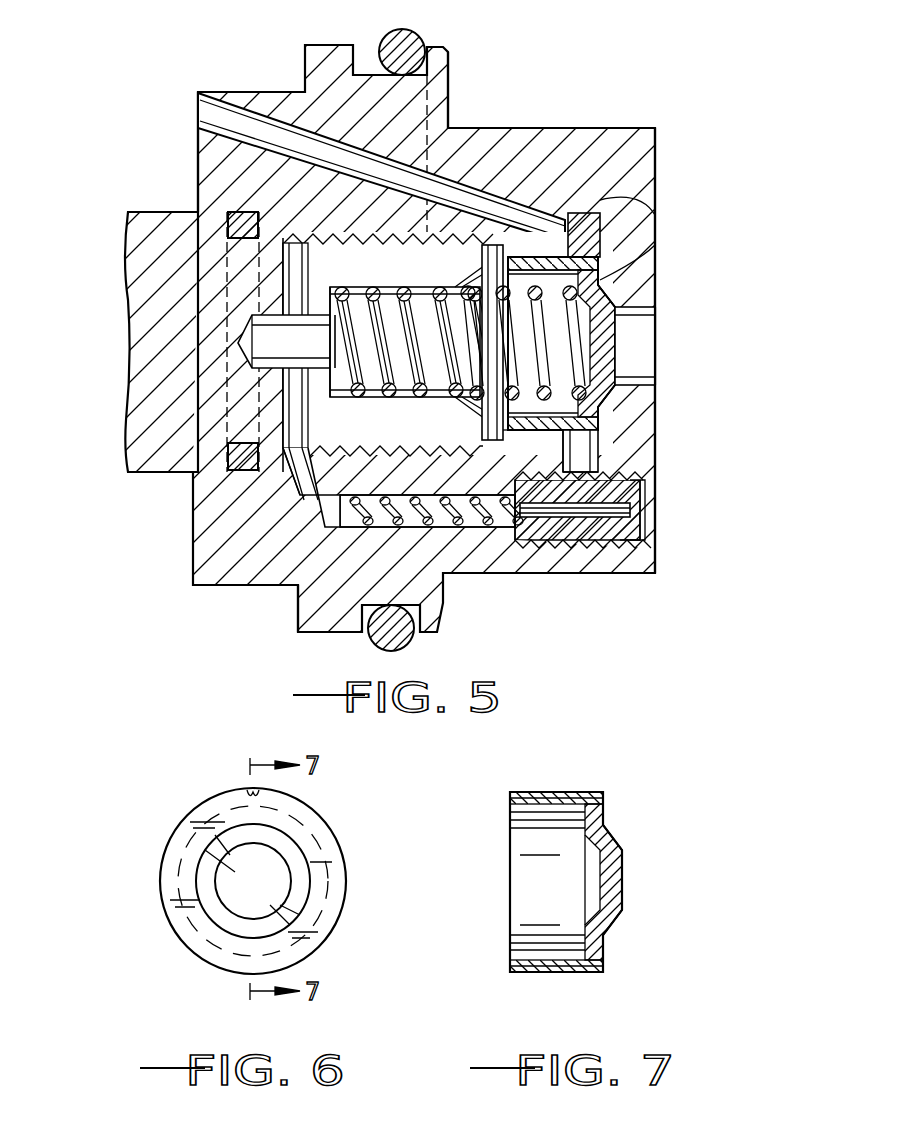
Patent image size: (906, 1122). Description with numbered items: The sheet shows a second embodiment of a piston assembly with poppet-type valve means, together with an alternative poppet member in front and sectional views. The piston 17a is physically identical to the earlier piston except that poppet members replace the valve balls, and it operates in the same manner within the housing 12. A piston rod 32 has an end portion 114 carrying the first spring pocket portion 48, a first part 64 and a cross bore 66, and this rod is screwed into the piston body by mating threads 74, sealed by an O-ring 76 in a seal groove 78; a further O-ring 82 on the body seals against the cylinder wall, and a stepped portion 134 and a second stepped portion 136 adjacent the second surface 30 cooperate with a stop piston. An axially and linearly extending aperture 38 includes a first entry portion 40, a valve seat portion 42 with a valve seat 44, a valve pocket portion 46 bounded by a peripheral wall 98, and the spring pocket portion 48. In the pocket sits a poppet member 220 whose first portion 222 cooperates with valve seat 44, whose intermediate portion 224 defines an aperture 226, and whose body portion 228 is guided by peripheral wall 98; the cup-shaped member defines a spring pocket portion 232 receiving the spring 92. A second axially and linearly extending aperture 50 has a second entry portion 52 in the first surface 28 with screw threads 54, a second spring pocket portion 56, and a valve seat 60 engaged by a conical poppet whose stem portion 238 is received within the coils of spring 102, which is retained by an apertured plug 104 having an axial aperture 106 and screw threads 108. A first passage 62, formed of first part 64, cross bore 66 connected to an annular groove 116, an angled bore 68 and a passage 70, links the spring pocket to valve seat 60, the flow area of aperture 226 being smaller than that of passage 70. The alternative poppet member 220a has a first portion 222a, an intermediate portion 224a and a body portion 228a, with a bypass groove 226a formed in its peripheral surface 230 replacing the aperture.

In FIG. 5, the housing 12 is at (330, 45).
In FIG. 5, the piston 17a is at (485, 68).
In FIG. 5, the first surface 28 is at (655, 214).
In FIG. 5, the second surface 30 is at (198, 154).
In FIG. 5, the piston rod 32 is at (150, 212).
In FIG. 5, the axially and linearly extending aperture 38 is at (672, 348).
In FIG. 5, the first entry portion 40 is at (635, 357).
In FIG. 5, the valve seat portion 42 is at (590, 452).
In FIG. 5, the valve seat 44 is at (600, 440).
In FIG. 5, the valve pocket portion 46 is at (570, 462).
In FIG. 5, the first spring pocket portion 48 is at (450, 285).
In FIG. 5, the second axially and linearly extending aperture 50 is at (650, 505).
In FIG. 5, the second entry portion 52 is at (650, 530).
In FIG. 5, the screw threads 54 is at (655, 548).
In FIG. 5, the second spring pocket portion 56 is at (450, 545).
In FIG. 5, the valve seat 60 is at (362, 515).
In FIG. 5, the first passage 62 is at (260, 418).
In FIG. 5, the first part 64 is at (270, 343).
In FIG. 5, the cross bore 66 is at (295, 395).
In FIG. 5, the angled bore 68 is at (292, 488).
In FIG. 5, the passage 70 is at (318, 512).
In FIG. 5, the mating threads 74 is at (340, 283).
In FIG. 5, the O-ring 76 is at (238, 240).
In FIG. 5, the seal groove 78 is at (228, 228).
In FIG. 5, the O-ring 82 is at (410, 640).
In FIG. 5, the spring 92 is at (400, 285).
In FIG. 5, the peripheral wall 98 is at (518, 265).
In FIG. 5, the spring 102 is at (410, 530).
In FIG. 5, the apertured plug 104 is at (585, 540).
In FIG. 5, the axial aperture 106 is at (540, 515).
In FIG. 5, the screw threads 108 is at (645, 562).
In FIG. 5, the end portion 114 is at (380, 238).
In FIG. 5, the annular groove 116 is at (283, 252).
In FIG. 5, the stepped portion 134 is at (562, 128).
In FIG. 5, the second stepped portion 136 is at (240, 92).
In FIG. 5, the poppet member 220 is at (615, 330).
In FIG. 5, the first portion 222 is at (612, 302).
In FIG. 5, the intermediate portion 224 is at (600, 248).
In FIG. 5, the aperture 226 is at (598, 268).
In FIG. 5, the body portion 228 is at (655, 192).
In FIG. 5, the spring pocket portion 232 is at (515, 432).
In FIG. 7, the spring pocket portion 232 is at (525, 893).
In FIG. 5, the stem portion 238 is at (360, 528).
In FIG. 6, the poppet member 220a is at (340, 823).
In FIG. 7, the poppet member 220a is at (620, 808).
In FIG. 6, the first portion 222a is at (300, 878).
In FIG. 7, the first portion 222a is at (622, 876).
In FIG. 7, the intermediate portion 224a is at (605, 820).
In FIG. 6, the bypass groove 226a is at (248, 792).
In FIG. 7, the bypass groove 226a is at (552, 792).
In FIG. 6, the body portion 228a is at (335, 920).
In FIG. 7, the body portion 228a is at (590, 972).
In FIG. 7, the peripheral surface 230 is at (530, 972).